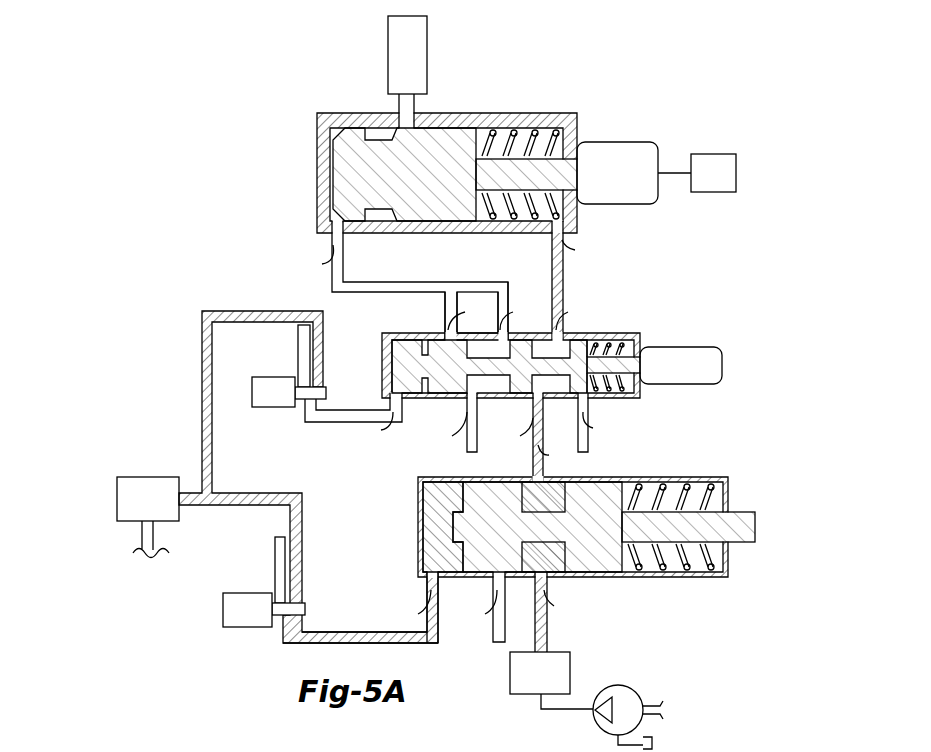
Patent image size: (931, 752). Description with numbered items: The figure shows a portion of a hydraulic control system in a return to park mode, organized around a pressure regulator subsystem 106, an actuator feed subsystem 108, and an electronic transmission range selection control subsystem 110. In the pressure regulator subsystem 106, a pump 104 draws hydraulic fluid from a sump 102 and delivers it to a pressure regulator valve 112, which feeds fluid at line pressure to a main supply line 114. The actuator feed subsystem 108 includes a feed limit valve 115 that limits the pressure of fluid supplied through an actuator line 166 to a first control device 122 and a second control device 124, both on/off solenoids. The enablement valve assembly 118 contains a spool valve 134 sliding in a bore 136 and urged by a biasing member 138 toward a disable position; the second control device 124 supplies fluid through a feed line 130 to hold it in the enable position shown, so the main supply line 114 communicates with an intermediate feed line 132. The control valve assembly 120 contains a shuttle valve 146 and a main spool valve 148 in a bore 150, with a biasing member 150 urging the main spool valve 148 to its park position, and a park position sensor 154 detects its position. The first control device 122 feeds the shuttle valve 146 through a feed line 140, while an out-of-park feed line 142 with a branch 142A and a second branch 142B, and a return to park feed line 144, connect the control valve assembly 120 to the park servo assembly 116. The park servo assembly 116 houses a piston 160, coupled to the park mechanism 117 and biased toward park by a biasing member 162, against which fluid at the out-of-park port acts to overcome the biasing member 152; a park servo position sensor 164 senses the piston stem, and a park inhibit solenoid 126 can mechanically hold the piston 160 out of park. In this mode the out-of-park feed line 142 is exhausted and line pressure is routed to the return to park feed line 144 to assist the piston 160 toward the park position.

The sump 102 is at (653, 742).
The pump 104 is at (618, 685).
The pressure regulator subsystem 106 is at (518, 707).
The actuator feed subsystem 108 is at (122, 474).
The electronic transmission range selection (ETRS) control subsystem 110 is at (228, 44).
The pressure regulator valve 112 is at (554, 683).
The main supply line 114 is at (545, 632).
The feed limit valve 115 is at (162, 512).
The park servo assembly 116 is at (675, 93).
The park mechanism 117 is at (727, 183).
The enablement valve assembly 118 is at (722, 455).
The control valve assembly 120 is at (668, 296).
The first control device 122 is at (266, 407).
The second control device 124 is at (228, 611).
The park inhibit solenoid 126 is at (388, 56).
The feed line 130 is at (345, 632).
The intermediate feed line 132 is at (533, 450).
The spool valve 134 is at (612, 490).
The bore 136 is at (690, 560).
The biasing member 138 is at (715, 497).
The feed line 140 is at (348, 411).
The out-of-park feed line 142 is at (388, 282).
The branch of the out-of-park feed line 142A is at (445, 300).
The second branch of the out-of-park feed line 142B is at (500, 300).
The return to park feed line 144 is at (560, 280).
The shuttle valve 146 is at (415, 385).
The main spool valve 148 is at (580, 343).
The biasing member 150 is at (605, 383).
The biasing member 152 is at (630, 345).
The park position sensor 154 is at (690, 348).
The piston 160 is at (340, 172).
The biasing member 162 is at (518, 135).
The park servo position sensor 164 is at (634, 147).
The actuator line 166 is at (558, 165).